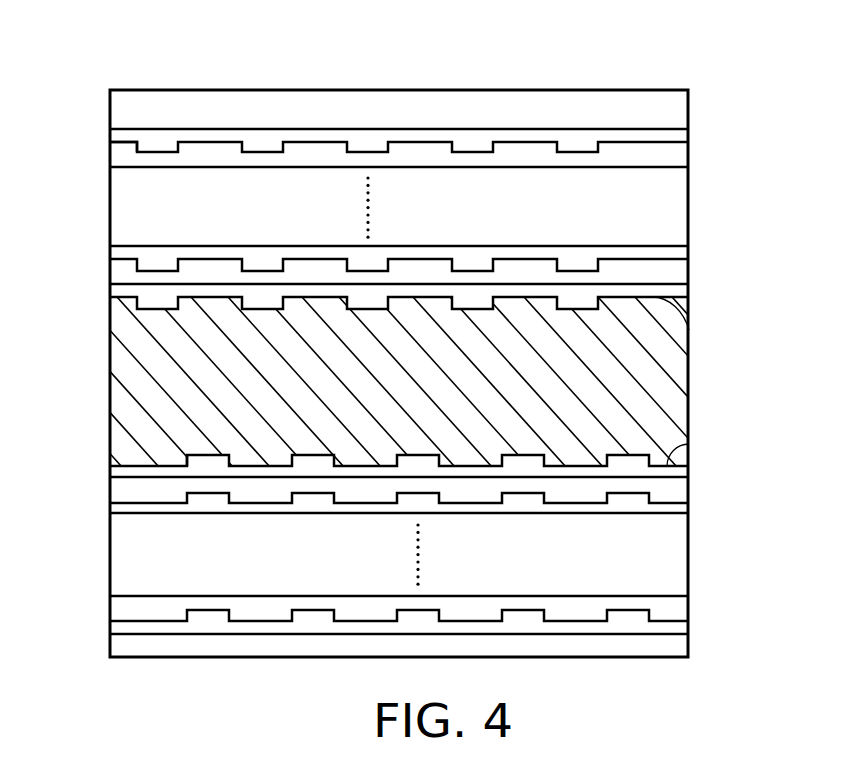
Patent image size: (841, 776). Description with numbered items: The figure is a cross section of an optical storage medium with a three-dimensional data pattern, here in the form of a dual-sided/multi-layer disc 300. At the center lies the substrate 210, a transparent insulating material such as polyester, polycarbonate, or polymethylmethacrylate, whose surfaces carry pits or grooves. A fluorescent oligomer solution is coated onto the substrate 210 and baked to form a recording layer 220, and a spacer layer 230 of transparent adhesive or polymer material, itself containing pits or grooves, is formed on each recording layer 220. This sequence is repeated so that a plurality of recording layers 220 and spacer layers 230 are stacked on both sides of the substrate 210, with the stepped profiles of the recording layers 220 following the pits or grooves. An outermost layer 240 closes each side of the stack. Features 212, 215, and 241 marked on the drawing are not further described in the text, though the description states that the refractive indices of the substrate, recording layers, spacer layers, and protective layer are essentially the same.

The dual-sided/multi-layer disc 300 is at (840, 28).
The substrate 210 is at (663, 380).
The curved edge of substrate 212 is at (689, 330).
The protrusion 215 is at (137, 146).
The recording layer 220 is at (663, 135).
The spacer layer 230 is at (677, 157).
The outer layer 240 is at (663, 112).
The curved corner 241 is at (686, 446).